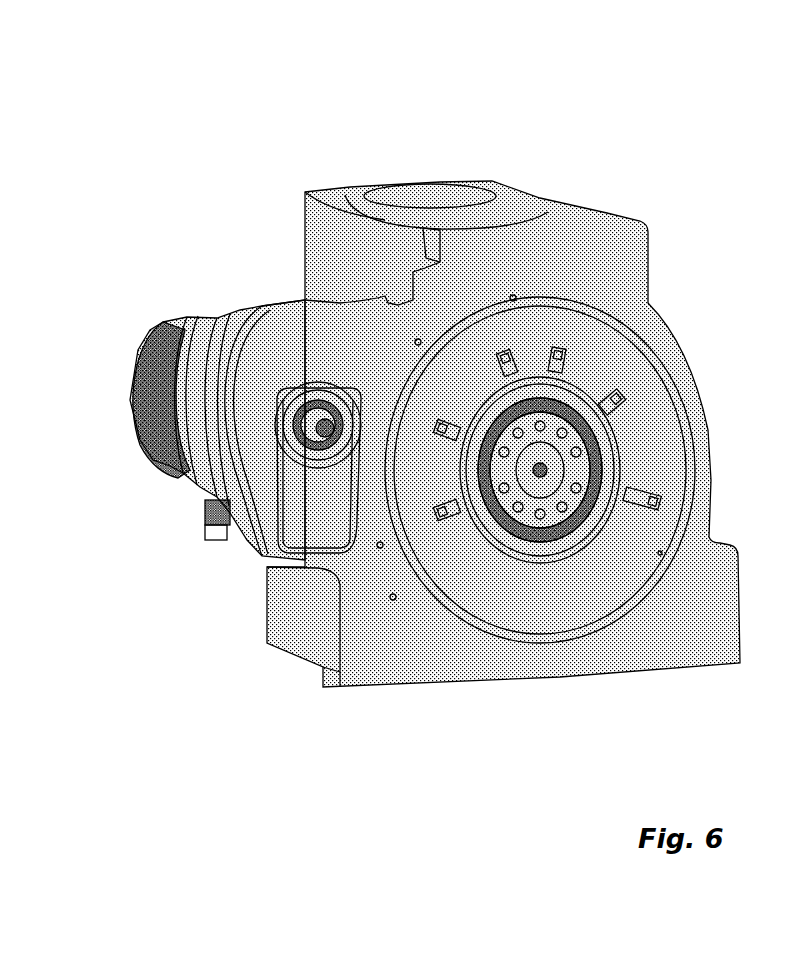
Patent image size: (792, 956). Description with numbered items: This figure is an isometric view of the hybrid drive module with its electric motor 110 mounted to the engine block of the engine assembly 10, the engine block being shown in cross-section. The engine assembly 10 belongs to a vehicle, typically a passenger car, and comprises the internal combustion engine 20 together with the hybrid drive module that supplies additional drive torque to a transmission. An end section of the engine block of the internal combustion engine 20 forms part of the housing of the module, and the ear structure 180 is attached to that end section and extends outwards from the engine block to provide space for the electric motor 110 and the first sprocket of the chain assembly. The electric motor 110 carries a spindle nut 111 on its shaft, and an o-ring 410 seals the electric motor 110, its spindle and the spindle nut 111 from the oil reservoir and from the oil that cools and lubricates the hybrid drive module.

The engine assembly 10 is at (503, 364).
The internal combustion engine 20 is at (503, 434).
The electric motor 110 is at (143, 444).
The spindle nut 111 is at (296, 456).
The ear structure 180 is at (309, 293).
The o-ring 410 is at (357, 470).